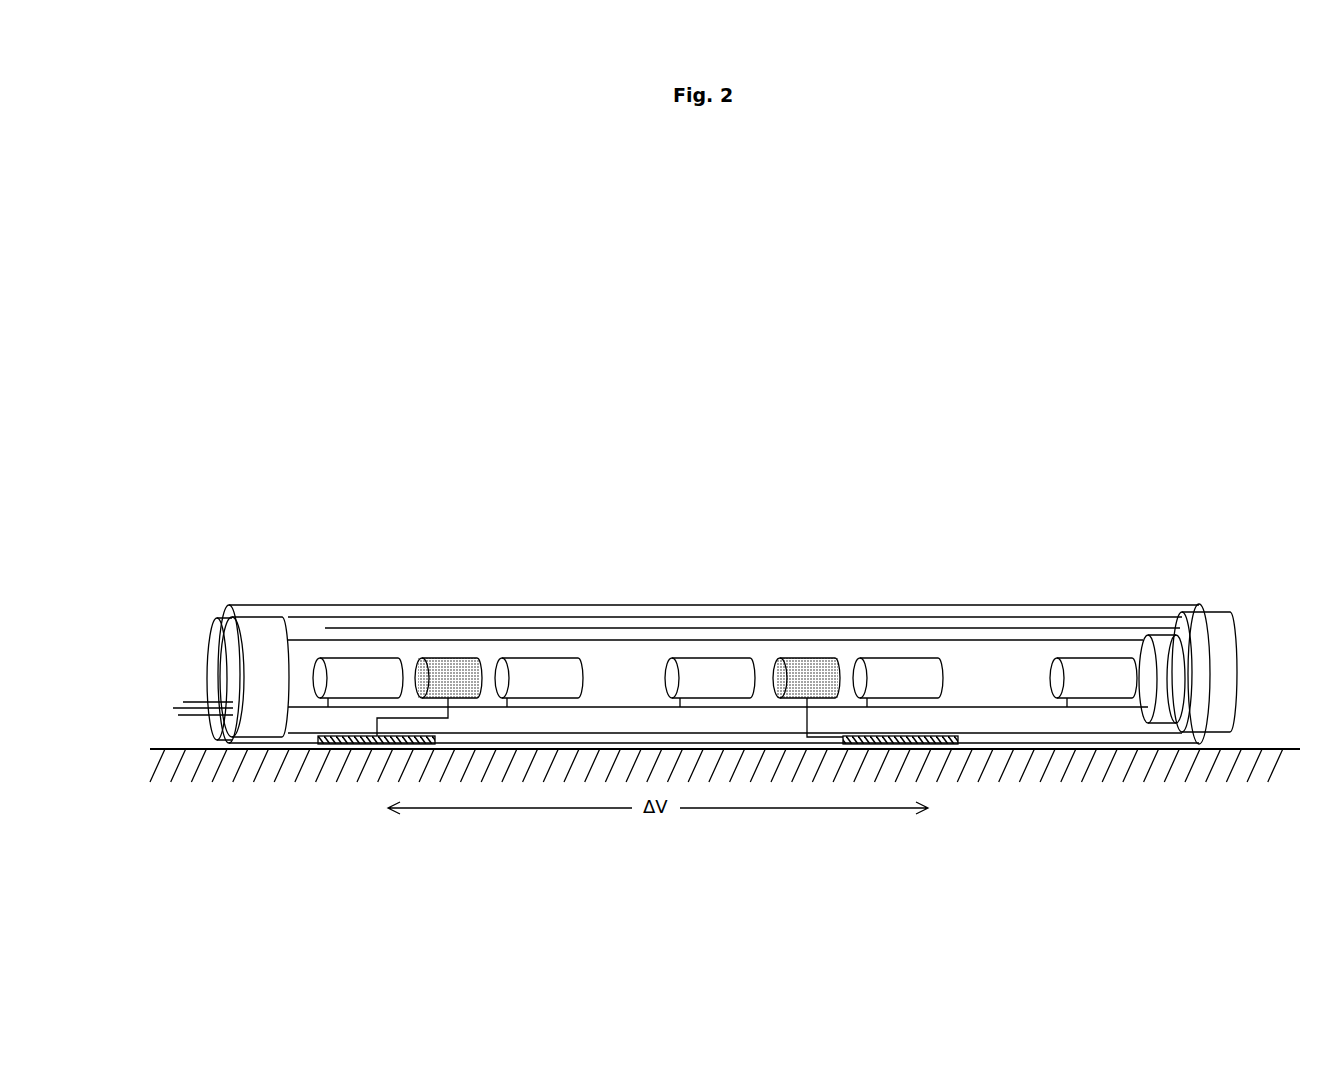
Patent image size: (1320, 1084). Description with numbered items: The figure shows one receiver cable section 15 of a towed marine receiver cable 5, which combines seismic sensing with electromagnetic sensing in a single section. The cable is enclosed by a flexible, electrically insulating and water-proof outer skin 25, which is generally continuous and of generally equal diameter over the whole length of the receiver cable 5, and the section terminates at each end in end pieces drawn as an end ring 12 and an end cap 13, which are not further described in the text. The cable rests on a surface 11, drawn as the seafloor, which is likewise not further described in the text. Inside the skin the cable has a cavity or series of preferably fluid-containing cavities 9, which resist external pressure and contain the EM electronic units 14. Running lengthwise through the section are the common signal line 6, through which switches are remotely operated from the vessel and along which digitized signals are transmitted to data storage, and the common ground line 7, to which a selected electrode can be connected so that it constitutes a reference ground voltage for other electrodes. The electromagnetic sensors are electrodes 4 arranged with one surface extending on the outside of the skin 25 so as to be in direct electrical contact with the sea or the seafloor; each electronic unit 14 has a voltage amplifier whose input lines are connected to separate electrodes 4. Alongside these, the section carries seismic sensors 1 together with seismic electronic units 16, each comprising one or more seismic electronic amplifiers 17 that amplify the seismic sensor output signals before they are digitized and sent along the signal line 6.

The seismic sensor 1 is at (722, 663).
The seismic electronic unit 16 is at (898, 682).
The seismic electronic amplifier 17 is at (1093, 682).
The electrode 4 is at (413, 749).
The receiver cable 5 is at (203, 708).
The common signal line 6 is at (973, 640).
The common ground line 7 is at (1005, 628).
The fluid-containing cavity 9 is at (763, 620).
The ground 11 is at (210, 767).
The end ring 12 is at (212, 640).
The end cap 13 is at (263, 637).
The electronic unit 14 is at (447, 665).
The receiver cable section 15 is at (1222, 364).
The outer skin 25 is at (382, 605).